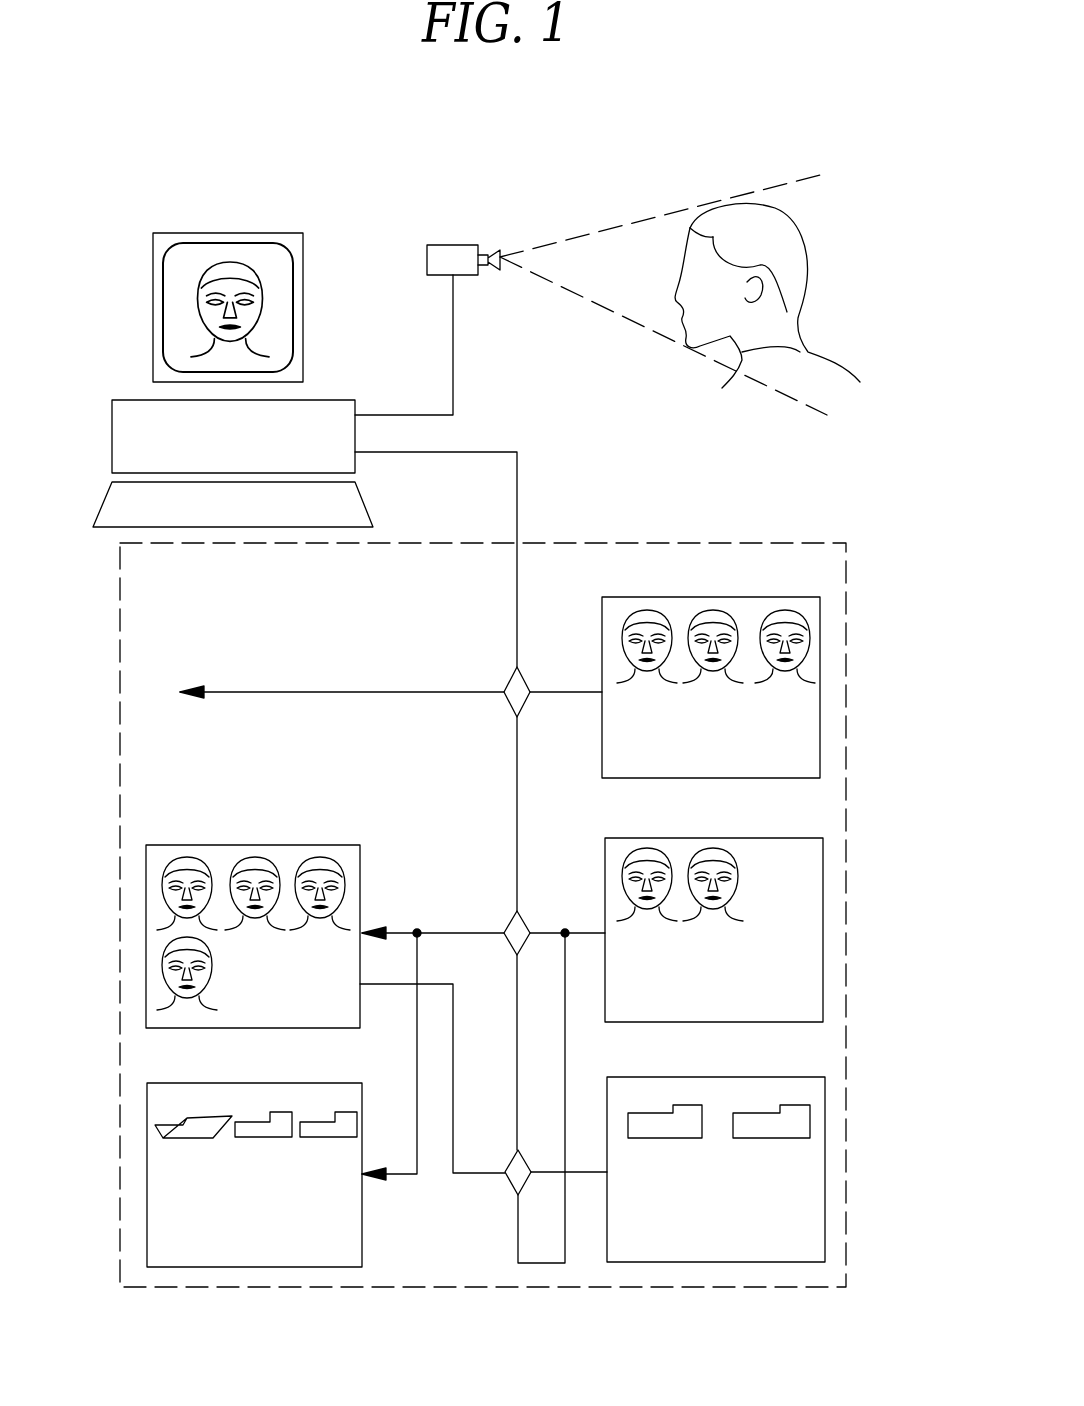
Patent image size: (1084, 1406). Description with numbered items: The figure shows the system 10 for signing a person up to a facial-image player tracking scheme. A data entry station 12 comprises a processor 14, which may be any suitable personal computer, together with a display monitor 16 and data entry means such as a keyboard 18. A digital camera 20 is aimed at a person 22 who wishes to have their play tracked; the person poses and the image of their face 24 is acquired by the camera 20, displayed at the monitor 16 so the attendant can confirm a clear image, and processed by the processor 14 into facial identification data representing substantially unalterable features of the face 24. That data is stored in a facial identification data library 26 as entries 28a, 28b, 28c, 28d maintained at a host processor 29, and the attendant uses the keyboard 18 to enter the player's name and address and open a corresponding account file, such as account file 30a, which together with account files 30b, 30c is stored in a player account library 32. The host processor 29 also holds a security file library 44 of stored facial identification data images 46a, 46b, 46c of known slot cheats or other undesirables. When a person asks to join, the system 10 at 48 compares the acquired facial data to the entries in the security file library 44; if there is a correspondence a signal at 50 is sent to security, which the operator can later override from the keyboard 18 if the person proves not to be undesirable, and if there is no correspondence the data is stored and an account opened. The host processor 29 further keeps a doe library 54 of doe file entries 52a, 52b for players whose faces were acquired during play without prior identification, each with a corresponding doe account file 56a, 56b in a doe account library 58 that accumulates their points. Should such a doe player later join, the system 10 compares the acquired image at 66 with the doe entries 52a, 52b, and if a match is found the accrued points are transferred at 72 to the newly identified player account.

The system 10 is at (383, 235).
The data entry station 12 is at (350, 345).
The processor 14 is at (355, 400).
The display monitor 16 is at (253, 233).
The keyboard 18 is at (372, 505).
The digital camera 20 is at (455, 246).
The person 22 is at (832, 215).
The face 24 is at (228, 268).
The facial identification data (FID) library 26 is at (292, 845).
The facial identification data entry 28a is at (165, 893).
The facial identification data entry 28b is at (255, 855).
The facial identification data entry 28c is at (326, 853).
The facial identification data entry 28d is at (165, 975).
The host processor 29 is at (760, 542).
The player account file 30a is at (165, 1132).
The player account file 30b is at (255, 1128).
The player account file 30c is at (320, 1128).
The player account library 32 is at (362, 1257).
The security file library 44 is at (820, 690).
The facial identification data image 46a is at (622, 648).
The facial identification data image 46b is at (713, 612).
The facial identification data image 46c is at (795, 608).
The security comparison 48 is at (512, 668).
The security signal 50 is at (450, 690).
The doe file entry 52a is at (622, 878).
The doe file entry 52b is at (740, 875).
The doe library 54 is at (823, 928).
The doe account file 56a is at (628, 1126).
The doe account file 56b is at (768, 1125).
The doe account library 58 is at (825, 1170).
The doe image comparison 66 is at (512, 915).
The points transfer 72 is at (518, 1197).